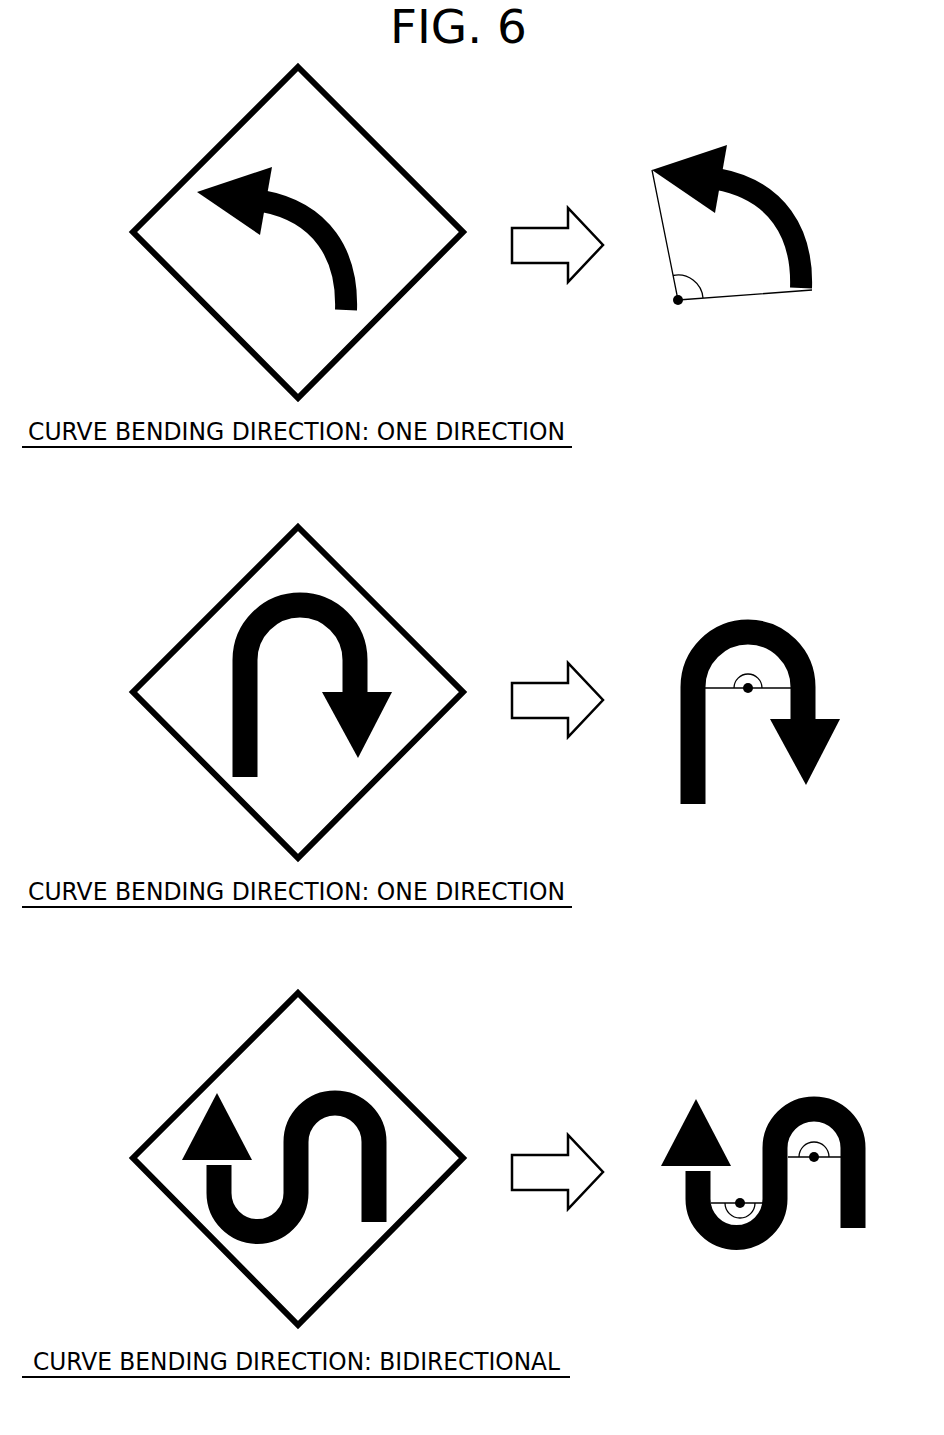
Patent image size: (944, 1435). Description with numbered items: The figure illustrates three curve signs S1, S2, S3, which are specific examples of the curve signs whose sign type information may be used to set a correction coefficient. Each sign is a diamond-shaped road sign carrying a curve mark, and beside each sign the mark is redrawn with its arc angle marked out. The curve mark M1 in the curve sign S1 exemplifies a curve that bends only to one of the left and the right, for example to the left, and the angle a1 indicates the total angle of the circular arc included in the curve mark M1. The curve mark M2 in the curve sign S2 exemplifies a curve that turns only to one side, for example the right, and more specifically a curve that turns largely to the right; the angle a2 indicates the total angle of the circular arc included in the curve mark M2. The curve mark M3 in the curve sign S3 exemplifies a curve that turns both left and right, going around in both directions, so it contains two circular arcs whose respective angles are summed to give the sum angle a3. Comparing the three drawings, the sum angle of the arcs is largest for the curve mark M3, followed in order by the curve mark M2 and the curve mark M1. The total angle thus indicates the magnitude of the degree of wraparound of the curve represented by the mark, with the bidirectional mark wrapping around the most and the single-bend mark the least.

The curve sign S1 is at (370, 132).
The curve mark M1 is at (330, 222).
The angle a1 is at (732, 225).
The curve sign S2 is at (365, 582).
The curve mark M2 is at (368, 637).
The angle a2 is at (748, 674).
The curve sign S3 is at (365, 1057).
The curve mark M3 is at (377, 1117).
The sum angle a3 is at (764, 1209).